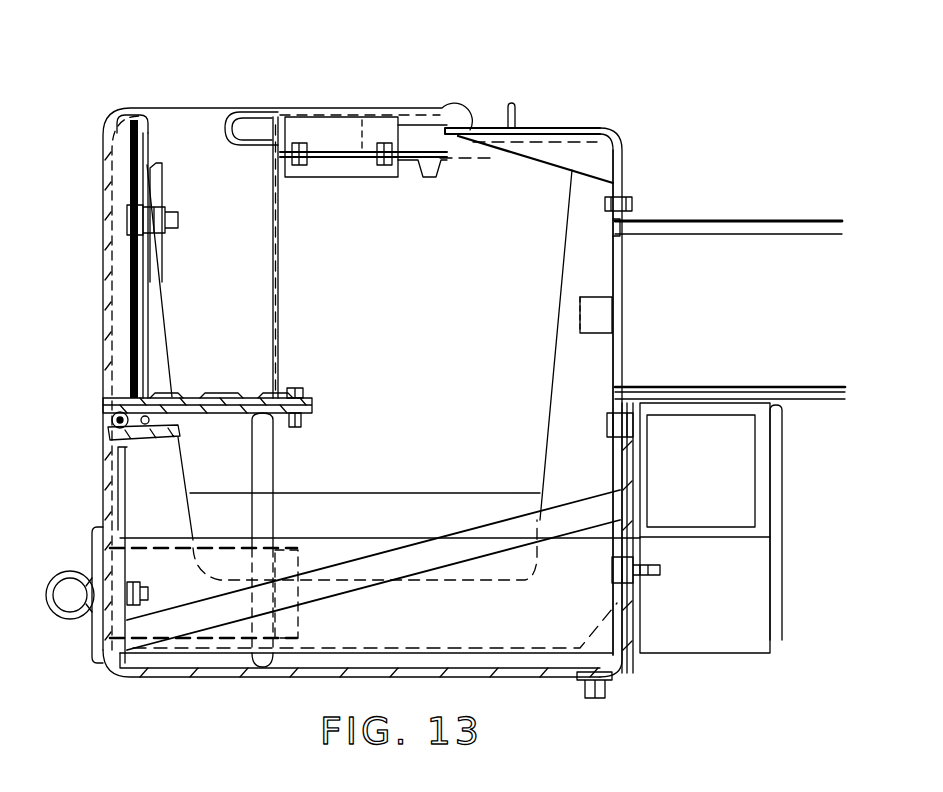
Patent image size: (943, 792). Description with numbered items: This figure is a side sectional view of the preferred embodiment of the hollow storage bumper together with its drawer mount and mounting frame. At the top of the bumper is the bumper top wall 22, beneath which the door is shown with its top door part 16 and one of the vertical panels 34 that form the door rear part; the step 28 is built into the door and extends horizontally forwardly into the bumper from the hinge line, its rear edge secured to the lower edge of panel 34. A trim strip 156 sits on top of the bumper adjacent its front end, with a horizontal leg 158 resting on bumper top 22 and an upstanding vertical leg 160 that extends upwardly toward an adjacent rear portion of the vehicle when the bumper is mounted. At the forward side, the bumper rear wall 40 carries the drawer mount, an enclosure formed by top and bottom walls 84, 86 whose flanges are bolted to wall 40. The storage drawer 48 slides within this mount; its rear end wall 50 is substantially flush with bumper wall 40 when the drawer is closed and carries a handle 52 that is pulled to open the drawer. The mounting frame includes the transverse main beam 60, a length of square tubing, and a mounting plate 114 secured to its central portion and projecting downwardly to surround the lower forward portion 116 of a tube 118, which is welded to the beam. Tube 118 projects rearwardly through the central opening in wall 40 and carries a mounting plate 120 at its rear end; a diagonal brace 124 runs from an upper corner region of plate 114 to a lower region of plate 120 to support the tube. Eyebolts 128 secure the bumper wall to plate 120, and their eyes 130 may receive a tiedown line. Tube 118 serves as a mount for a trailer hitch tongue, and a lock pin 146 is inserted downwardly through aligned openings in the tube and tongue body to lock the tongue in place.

The top door part 16 is at (375, 114).
The bumper top wall 22 is at (622, 136).
The step 28 is at (198, 398).
The vertical panel 34 is at (275, 293).
The bumper rear wall 40 is at (616, 492).
The storage drawer 48 is at (588, 266).
The rear end wall of drawer 50 is at (600, 362).
The handle 52 is at (580, 318).
The main beam 60 is at (688, 540).
The top wall of drawer mount 84 is at (748, 223).
The bottom wall of drawer mount 86 is at (795, 398).
The mounting plate 114 is at (630, 452).
The lower forward portion of tube 116 is at (696, 655).
The tube 118 is at (372, 553).
The mounting plate 120 is at (123, 482).
The diagonal brace 124 is at (472, 552).
The eyebolt 128 is at (92, 560).
The eye 130 is at (72, 608).
The lock pin 146 is at (262, 518).
The trim strip 156 is at (528, 118).
The horizontal leg 158 is at (548, 127).
The vertical leg 160 is at (500, 128).